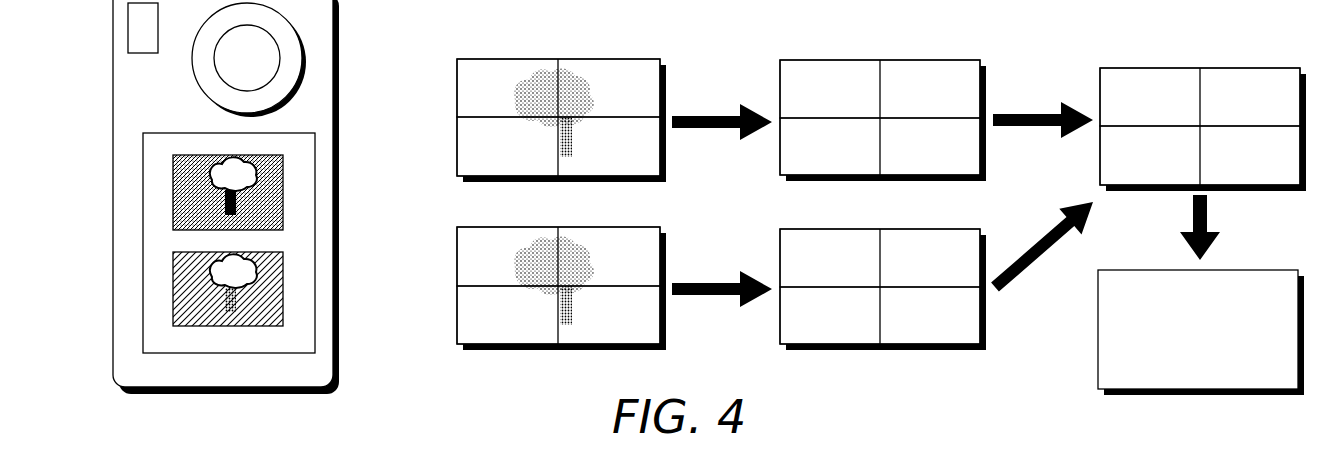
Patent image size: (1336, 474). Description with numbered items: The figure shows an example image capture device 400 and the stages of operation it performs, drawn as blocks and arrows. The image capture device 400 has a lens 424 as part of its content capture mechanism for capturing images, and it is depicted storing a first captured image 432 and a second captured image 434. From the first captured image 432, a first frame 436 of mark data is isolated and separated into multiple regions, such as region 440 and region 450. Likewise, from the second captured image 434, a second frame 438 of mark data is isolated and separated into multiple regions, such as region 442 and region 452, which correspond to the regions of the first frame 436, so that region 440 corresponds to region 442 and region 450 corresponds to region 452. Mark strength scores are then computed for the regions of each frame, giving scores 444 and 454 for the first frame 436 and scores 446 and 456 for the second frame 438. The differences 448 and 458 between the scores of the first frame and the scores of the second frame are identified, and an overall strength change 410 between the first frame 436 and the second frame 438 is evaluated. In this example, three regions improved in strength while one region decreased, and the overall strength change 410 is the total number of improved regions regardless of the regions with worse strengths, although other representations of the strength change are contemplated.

The image capture device 400 is at (113, 61).
The lens 424 is at (213, 74).
The first captured image 432 is at (173, 192).
The second captured image 434 is at (173, 284).
The first frame 436 is at (521, 93).
The second frame 438 is at (521, 310).
The region 440 is at (457, 86).
The region 450 is at (457, 146).
The region 442 is at (457, 256).
The region 452 is at (457, 311).
The mark strength score 444 is at (842, 124).
The mark strength score 454 is at (780, 163).
The mark strength score 446 is at (843, 290).
The mark strength score 456 is at (780, 326).
The difference 448 is at (1160, 123).
The difference 458 is at (1100, 156).
The overall strength change 410 is at (1098, 332).